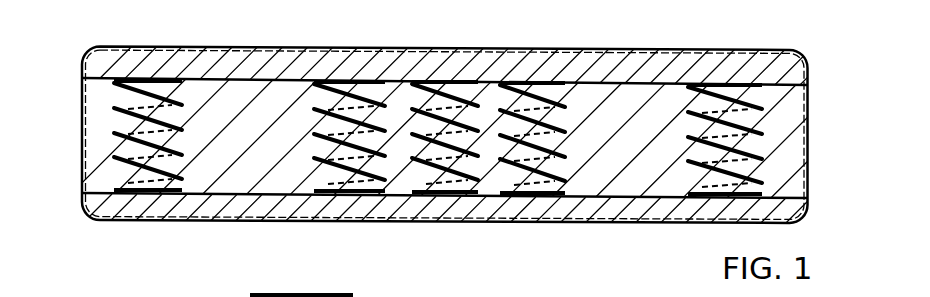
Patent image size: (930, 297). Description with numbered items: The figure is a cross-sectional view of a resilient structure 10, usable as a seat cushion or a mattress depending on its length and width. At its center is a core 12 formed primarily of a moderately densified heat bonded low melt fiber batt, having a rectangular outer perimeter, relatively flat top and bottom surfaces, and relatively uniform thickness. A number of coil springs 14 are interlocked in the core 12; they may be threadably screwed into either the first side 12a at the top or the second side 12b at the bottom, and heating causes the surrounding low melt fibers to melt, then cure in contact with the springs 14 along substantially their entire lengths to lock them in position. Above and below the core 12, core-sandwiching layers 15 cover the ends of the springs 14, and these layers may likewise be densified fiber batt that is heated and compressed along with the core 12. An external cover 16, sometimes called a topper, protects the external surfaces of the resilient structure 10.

The resilient structure 10 is at (460, 111).
The core 12 is at (95, 146).
The first side 12a is at (257, 78).
The second side 12b is at (258, 196).
The coil spring 14 is at (112, 189).
The core-sandwiching layers 15 is at (607, 54).
The external cover 16 is at (143, 48).